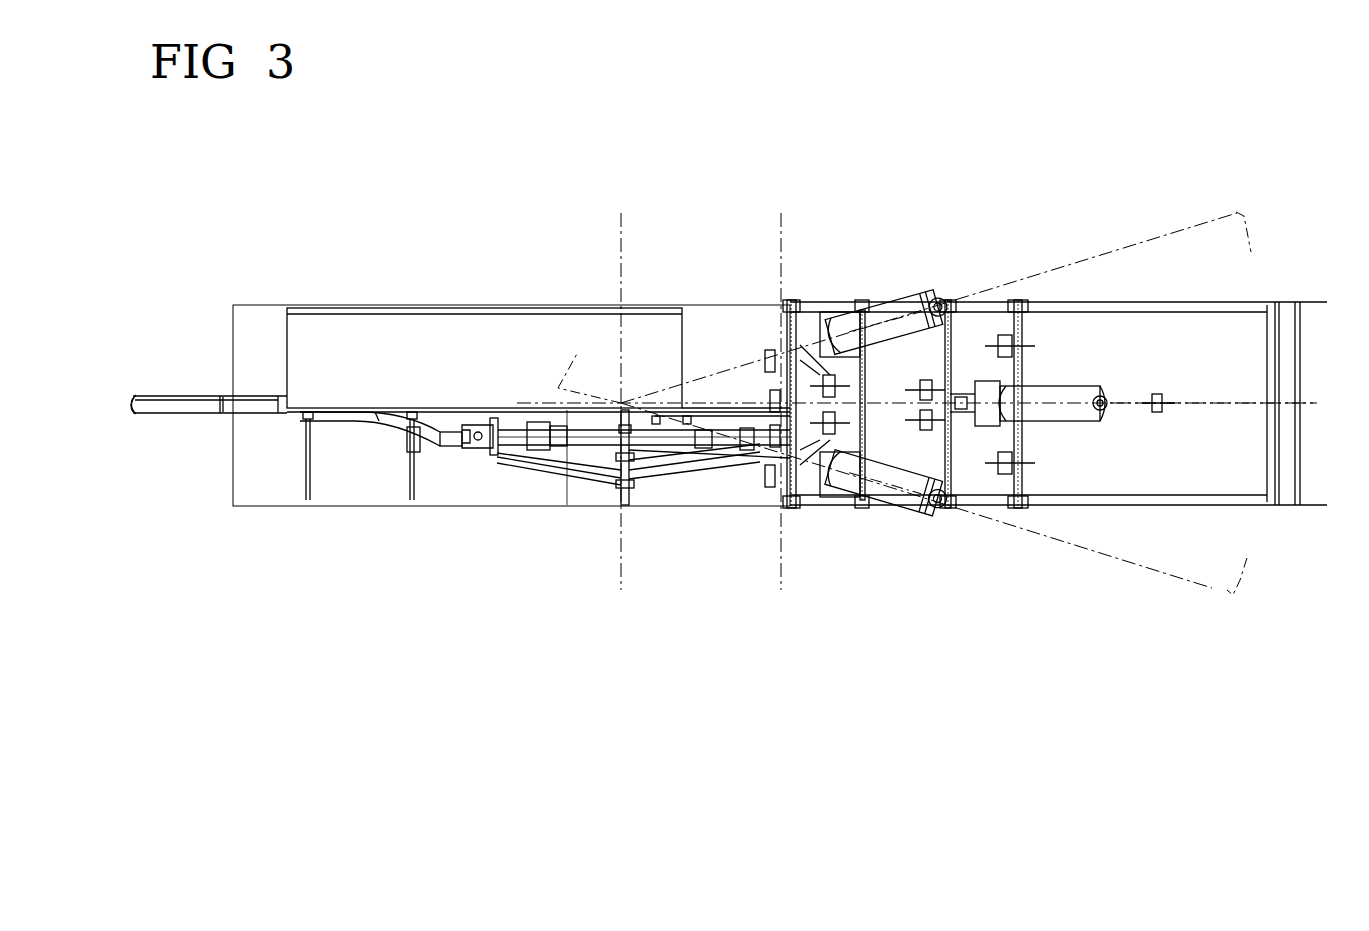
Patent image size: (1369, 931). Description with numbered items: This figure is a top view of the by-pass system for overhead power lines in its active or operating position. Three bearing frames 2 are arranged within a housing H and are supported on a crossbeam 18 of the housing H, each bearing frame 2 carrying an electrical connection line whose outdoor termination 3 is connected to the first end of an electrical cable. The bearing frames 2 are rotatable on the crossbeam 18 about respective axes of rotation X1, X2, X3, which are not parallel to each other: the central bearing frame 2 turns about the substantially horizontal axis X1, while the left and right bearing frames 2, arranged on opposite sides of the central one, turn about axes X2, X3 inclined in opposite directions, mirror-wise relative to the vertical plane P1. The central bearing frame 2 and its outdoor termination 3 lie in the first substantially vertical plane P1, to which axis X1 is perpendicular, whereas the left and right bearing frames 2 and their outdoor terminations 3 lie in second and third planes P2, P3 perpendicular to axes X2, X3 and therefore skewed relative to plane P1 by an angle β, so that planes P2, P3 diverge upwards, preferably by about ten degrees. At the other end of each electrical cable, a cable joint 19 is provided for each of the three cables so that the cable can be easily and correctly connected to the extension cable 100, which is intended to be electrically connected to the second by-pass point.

The cable 100 is at (198, 408).
The housing H is at (368, 512).
The cable joint 19 is at (485, 448).
The bearing frame 2 is at (593, 495).
The crossbeam 18 is at (628, 488).
The outdoor termination 3 is at (900, 292).
The axis of rotation X1 is at (780, 240).
The axis of rotation X2 is at (620, 233).
The axis of rotation X3 is at (623, 277).
The first plane P1 is at (1227, 403).
The second plane P2 is at (1227, 235).
The third plane P3 is at (1230, 577).